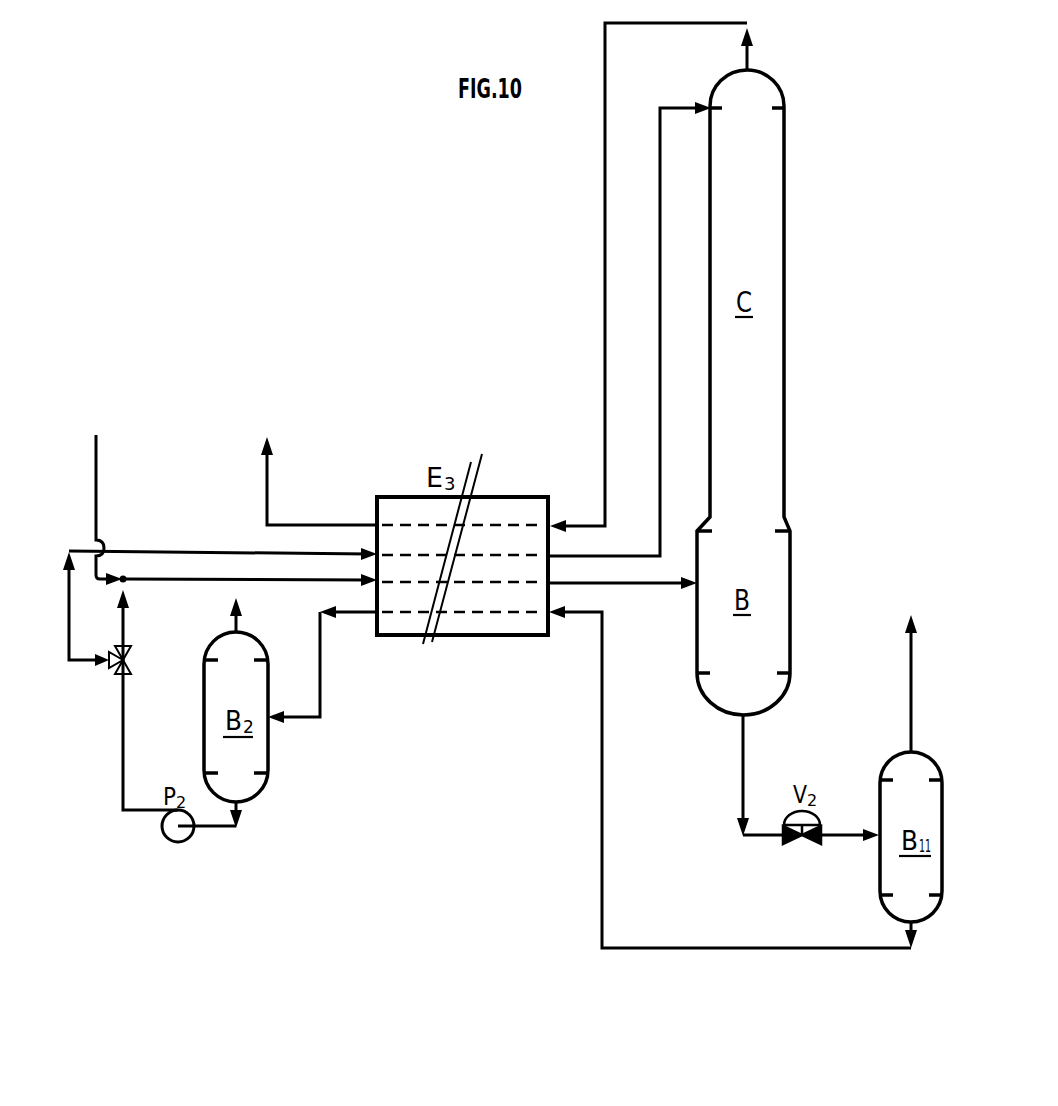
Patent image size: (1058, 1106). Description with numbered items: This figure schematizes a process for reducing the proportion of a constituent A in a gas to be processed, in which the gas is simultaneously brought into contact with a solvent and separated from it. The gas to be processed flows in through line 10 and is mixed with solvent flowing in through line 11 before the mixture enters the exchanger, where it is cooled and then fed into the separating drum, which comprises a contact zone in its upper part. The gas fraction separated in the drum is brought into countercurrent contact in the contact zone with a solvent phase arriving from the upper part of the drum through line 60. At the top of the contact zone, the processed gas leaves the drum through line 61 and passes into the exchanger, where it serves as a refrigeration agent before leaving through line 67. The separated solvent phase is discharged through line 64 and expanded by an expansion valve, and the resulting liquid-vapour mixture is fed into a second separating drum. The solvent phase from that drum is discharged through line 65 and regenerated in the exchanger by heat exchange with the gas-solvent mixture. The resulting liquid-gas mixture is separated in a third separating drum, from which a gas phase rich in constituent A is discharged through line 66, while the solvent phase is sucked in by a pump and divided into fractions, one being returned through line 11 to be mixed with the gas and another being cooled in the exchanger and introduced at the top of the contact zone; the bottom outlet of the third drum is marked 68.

The line 10 is at (96, 484).
The line 11 is at (84, 668).
The line 60 is at (700, 106).
The line 61 is at (605, 157).
The line 64 is at (743, 770).
The line 65 is at (701, 946).
The line 66 is at (237, 622).
The line 67 is at (267, 486).
The liquid outlet line from vessel B2 68 is at (238, 829).